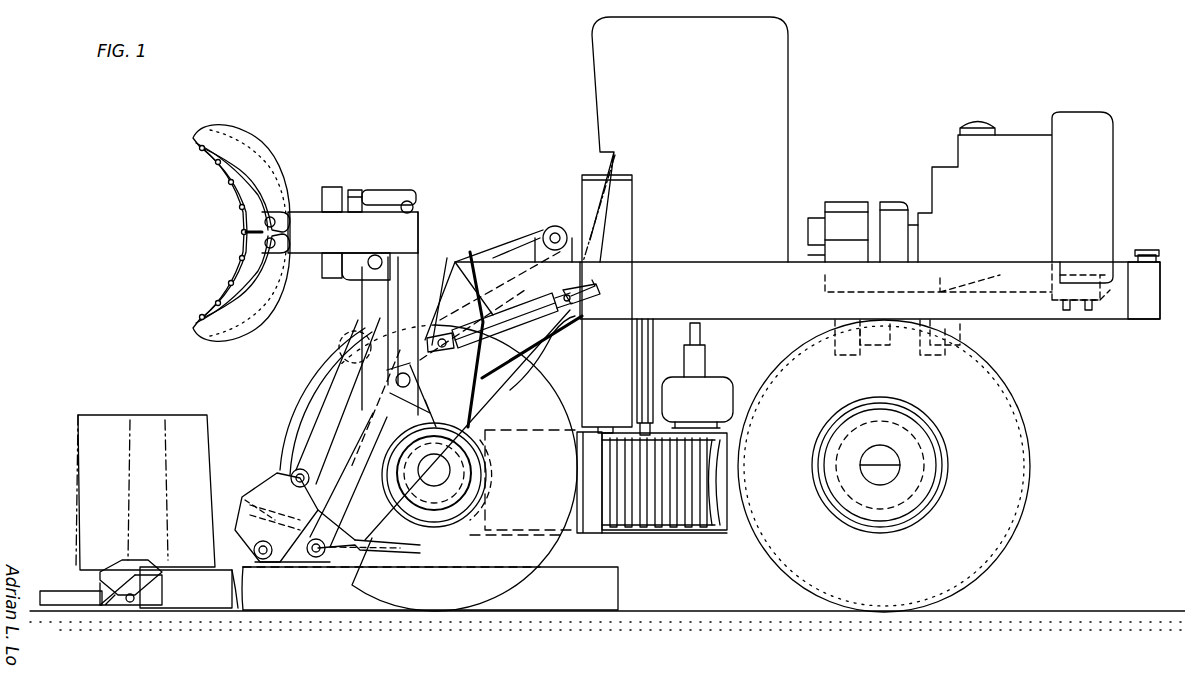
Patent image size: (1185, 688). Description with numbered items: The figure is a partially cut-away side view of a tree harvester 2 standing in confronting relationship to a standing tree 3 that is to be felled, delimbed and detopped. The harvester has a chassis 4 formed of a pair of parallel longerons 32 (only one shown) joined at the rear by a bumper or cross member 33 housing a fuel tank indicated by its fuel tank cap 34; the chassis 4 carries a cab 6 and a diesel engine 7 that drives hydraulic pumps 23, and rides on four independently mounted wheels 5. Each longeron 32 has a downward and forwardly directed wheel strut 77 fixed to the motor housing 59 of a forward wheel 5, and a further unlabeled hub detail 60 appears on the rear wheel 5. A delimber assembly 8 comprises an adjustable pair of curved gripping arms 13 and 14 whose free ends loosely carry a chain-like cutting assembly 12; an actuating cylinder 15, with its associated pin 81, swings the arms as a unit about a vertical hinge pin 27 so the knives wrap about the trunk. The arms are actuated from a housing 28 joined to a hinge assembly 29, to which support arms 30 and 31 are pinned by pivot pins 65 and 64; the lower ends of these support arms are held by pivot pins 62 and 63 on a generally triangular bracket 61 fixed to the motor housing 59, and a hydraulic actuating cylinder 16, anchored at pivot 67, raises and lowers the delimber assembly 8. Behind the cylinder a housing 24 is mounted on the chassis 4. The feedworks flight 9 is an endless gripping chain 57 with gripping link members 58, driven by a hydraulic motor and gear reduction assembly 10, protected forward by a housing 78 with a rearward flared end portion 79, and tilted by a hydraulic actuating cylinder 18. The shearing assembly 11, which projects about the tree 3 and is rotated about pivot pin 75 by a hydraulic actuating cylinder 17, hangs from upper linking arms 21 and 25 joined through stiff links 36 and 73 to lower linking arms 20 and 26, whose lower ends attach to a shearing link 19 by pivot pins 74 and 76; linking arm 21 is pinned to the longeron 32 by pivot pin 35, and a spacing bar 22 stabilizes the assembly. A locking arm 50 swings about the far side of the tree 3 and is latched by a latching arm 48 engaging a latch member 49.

The tree harvester 2 is at (1062, 345).
The tree 3 is at (82, 474).
The chassis 4 is at (1022, 320).
The wheels 5 is at (1032, 448).
The cab 6 is at (790, 66).
The diesel engine 7 is at (1018, 135).
The delimber assembly 8 is at (242, 231).
The flight 9 is at (669, 498).
The hydraulic motor and gear reduction assembly 10 is at (728, 380).
The shearing assembly 11 is at (570, 600).
The cutting assembly 12 is at (218, 170).
The gripping arm 13 is at (270, 150).
The gripping arm 14 is at (278, 320).
The actuating cylinder 15 is at (397, 190).
The hydraulic actuating cylinder 16 is at (521, 305).
The hydraulic actuating cylinder 17 is at (275, 506).
The hydraulic actuating cylinder 18 is at (648, 326).
The shearing link 19 is at (283, 480).
The linking arm 20 is at (320, 398).
The linking arm 21 is at (448, 270).
The spacing bar 22 is at (240, 507).
The hydraulic pumps 23 is at (850, 202).
The housing 24 is at (614, 328).
The linking arm 25 is at (540, 335).
The linking arm 26 is at (373, 476).
The hinge pin 27 is at (333, 187).
The housing 28 is at (300, 212).
The hinge assembly 29 is at (342, 276).
The support arm 30 is at (418, 260).
The support arm 31 is at (363, 326).
The longeron 32 is at (1105, 320).
The bumper or cross member 33 is at (1163, 310).
The fuel tank cap 34 is at (1147, 250).
The pivot pin 35 is at (551, 228).
The stiff link 36 is at (345, 356).
The latching arm 48 is at (112, 568).
The latch member 49 is at (96, 605).
The locking arm 50 is at (55, 591).
The endless gripping chain 57 is at (688, 527).
The gripping link members 58 is at (650, 527).
The motor housing 59 is at (480, 462).
The hub 60 is at (905, 455).
The bracket 61 is at (432, 405).
The pivot pin 62 is at (440, 300).
The pivot pin 63 is at (412, 381).
The pivot pin 64 is at (370, 268).
The pivot pin 65 is at (414, 209).
The pivot 67 is at (445, 338).
The stiff link 73 is at (434, 475).
The pivot pin 74 is at (303, 470).
The pivot pin 75 is at (256, 550).
The pivot pin 76 is at (317, 560).
The wheel strut 77 is at (478, 405).
The housing 78 is at (498, 535).
The flared end portion 79 is at (582, 492).
The pin 81 is at (372, 188).